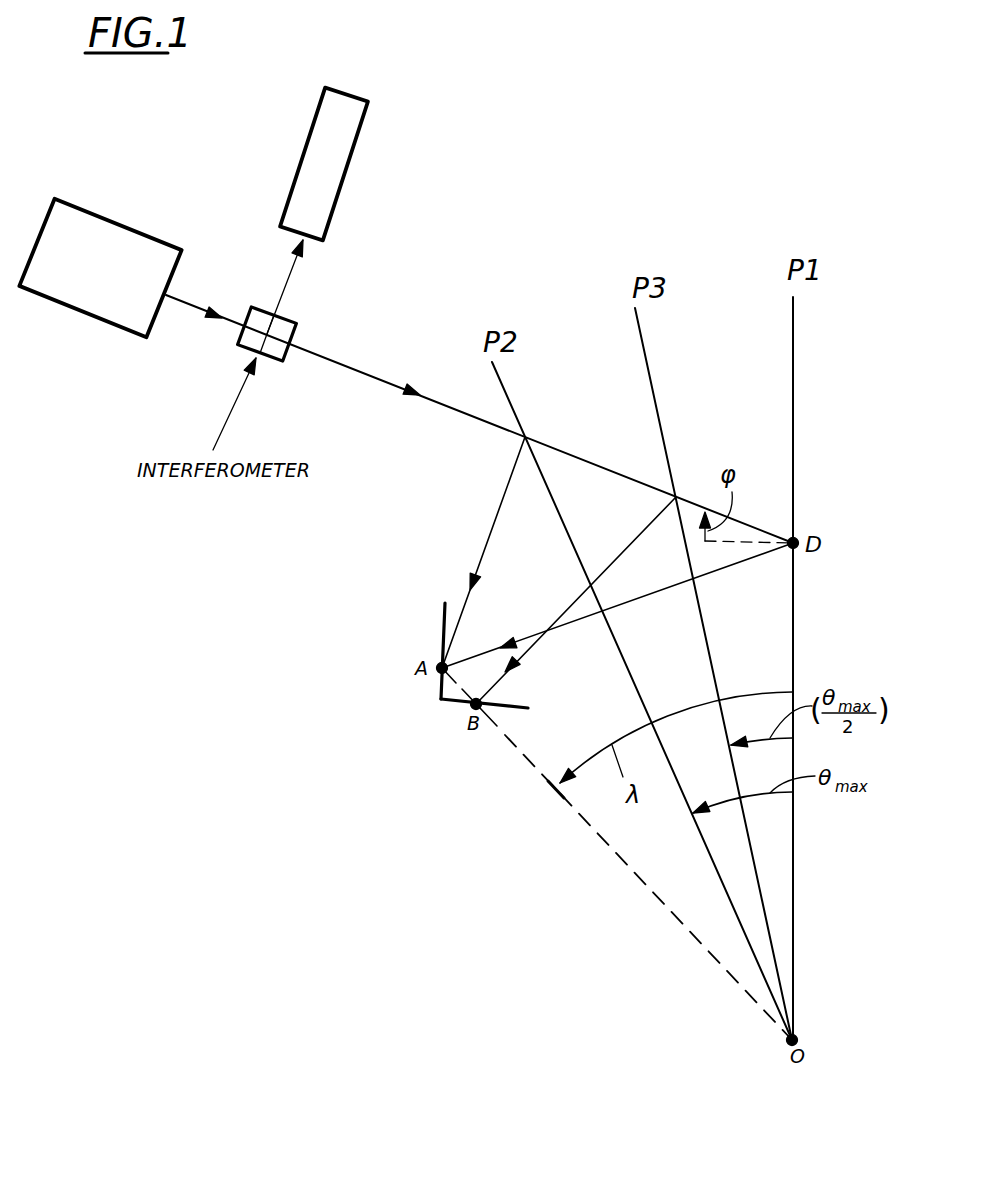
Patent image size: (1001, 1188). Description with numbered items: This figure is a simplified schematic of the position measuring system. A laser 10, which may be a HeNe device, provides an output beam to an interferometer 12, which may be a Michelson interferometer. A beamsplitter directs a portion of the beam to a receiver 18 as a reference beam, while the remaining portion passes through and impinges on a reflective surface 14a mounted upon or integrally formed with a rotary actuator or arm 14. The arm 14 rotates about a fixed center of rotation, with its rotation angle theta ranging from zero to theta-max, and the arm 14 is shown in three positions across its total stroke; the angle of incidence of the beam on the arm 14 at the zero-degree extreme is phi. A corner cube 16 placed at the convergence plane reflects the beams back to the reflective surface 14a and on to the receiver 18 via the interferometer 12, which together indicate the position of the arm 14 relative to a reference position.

The laser 10 is at (84, 323).
The interferometer 12 is at (271, 360).
The rotary actuator or arm 14 is at (794, 347).
The reflective surface 14a is at (793, 387).
The corner cube 16 is at (438, 686).
The receiver 18 is at (303, 143).